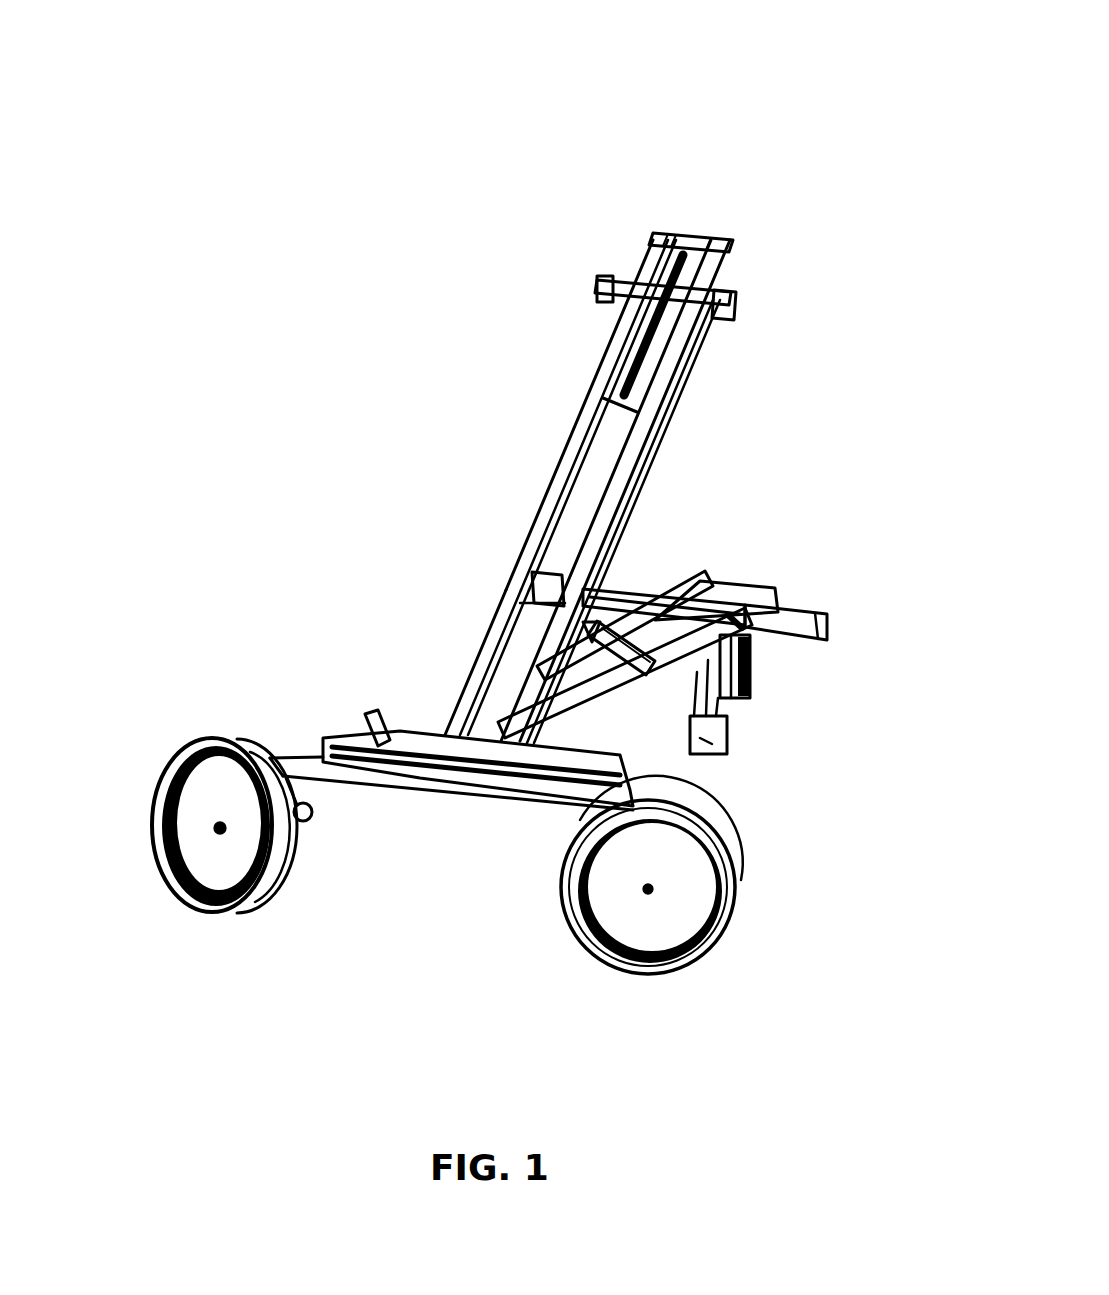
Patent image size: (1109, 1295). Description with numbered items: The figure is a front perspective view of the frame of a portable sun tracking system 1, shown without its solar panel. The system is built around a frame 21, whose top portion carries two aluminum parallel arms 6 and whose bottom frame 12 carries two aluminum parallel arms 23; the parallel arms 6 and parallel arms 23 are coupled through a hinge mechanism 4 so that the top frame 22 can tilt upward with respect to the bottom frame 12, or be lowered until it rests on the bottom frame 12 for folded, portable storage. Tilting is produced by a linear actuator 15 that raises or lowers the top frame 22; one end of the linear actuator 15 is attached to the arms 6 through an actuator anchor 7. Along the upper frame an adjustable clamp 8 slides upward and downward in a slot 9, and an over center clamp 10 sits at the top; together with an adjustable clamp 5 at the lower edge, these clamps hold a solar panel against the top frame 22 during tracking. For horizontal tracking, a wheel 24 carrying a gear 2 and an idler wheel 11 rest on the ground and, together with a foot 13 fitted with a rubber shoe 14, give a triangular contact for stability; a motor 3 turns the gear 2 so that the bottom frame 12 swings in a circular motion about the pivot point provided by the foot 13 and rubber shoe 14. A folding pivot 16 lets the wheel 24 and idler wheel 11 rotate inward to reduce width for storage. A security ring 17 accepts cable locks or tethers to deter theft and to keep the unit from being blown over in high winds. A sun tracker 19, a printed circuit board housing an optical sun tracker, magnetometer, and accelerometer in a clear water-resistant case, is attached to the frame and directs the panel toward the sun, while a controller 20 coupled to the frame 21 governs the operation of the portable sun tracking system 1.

The portable sun tracking system 1 is at (296, 136).
The gear 2 is at (213, 865).
The motor 3 is at (304, 820).
The hinge mechanism 4 is at (410, 772).
The adjustable clamp 5 is at (358, 722).
The parallel arms 6 is at (480, 650).
The actuator anchor 7 is at (542, 578).
The adjustable clamp 8 is at (722, 300).
The slot 9 is at (625, 380).
The over center clamp 10 is at (682, 237).
The idler wheel 11 is at (675, 915).
The bottom frame 12 is at (825, 628).
The foot 13 is at (730, 728).
The rubber shoe 14 is at (660, 719).
The linear actuator 15 is at (630, 598).
The folding pivot 16 is at (583, 722).
The security ring 17 is at (718, 588).
The sun tracker 19 is at (495, 778).
The controller 20 is at (750, 685).
The frame 21 is at (552, 427).
The top frame 22 is at (555, 490).
The parallel arms 23 is at (590, 706).
The wheel 24 is at (160, 762).